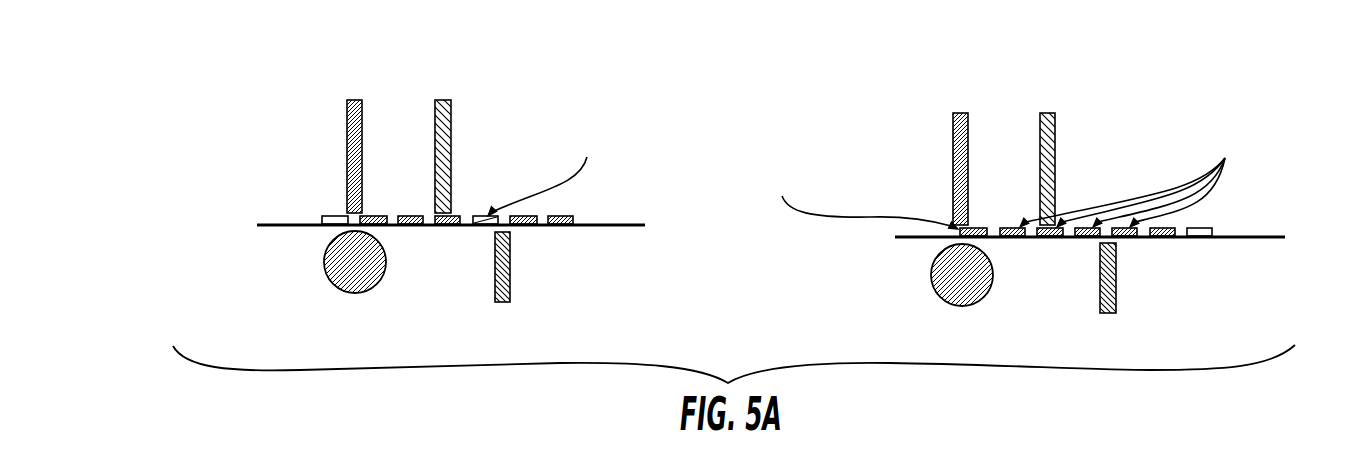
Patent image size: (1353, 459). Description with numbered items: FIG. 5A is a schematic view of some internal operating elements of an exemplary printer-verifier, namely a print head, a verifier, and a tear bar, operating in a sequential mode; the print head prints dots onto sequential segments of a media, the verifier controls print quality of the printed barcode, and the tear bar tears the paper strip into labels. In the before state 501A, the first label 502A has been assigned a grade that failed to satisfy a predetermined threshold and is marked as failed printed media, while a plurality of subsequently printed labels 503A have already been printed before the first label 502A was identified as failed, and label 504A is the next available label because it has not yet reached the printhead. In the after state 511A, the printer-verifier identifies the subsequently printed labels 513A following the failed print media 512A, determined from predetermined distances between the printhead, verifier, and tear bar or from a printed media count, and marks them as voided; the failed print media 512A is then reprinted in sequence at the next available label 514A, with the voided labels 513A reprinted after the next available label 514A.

The before 501A is at (401, 17).
The Label #1 502A is at (582, 113).
The subsequently printed labels 503A is at (447, 227).
The label 504A is at (305, 216).
The after 511A is at (840, 17).
The failed print media 512A is at (1140, 225).
The subsequently printed labels 513A is at (1087, 239).
The next available label 514A is at (953, 222).